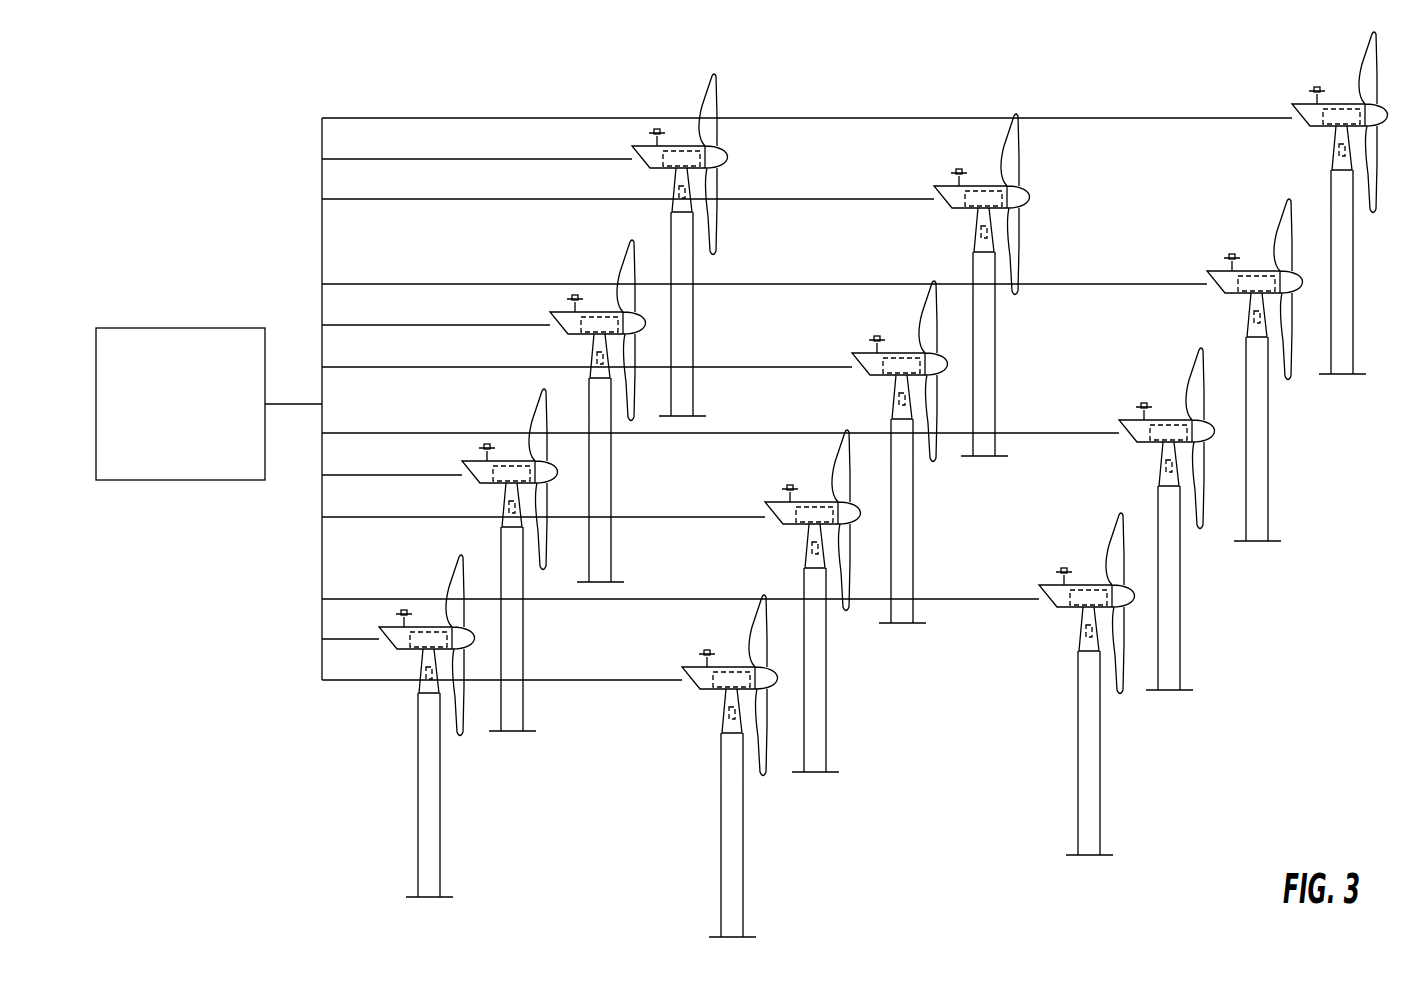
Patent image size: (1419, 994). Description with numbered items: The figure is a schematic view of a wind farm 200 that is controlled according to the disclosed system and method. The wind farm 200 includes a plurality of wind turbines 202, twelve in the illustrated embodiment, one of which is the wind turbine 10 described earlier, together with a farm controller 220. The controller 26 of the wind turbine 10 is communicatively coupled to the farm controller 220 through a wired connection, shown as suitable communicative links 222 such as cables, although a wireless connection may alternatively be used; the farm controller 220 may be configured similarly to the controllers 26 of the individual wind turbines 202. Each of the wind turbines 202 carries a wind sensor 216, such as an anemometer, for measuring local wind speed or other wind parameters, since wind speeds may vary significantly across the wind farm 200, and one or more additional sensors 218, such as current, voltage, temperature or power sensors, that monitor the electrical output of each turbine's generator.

The wind farm 200 is at (216, 181).
The farm controller 220 is at (197, 413).
The communicative links 222 is at (490, 283).
The wind turbines 202 is at (925, 484).
The wind turbine 10 is at (392, 722).
The controller 26 is at (354, 597).
The wind sensor 216 is at (655, 689).
The additional sensors 218 is at (681, 745).